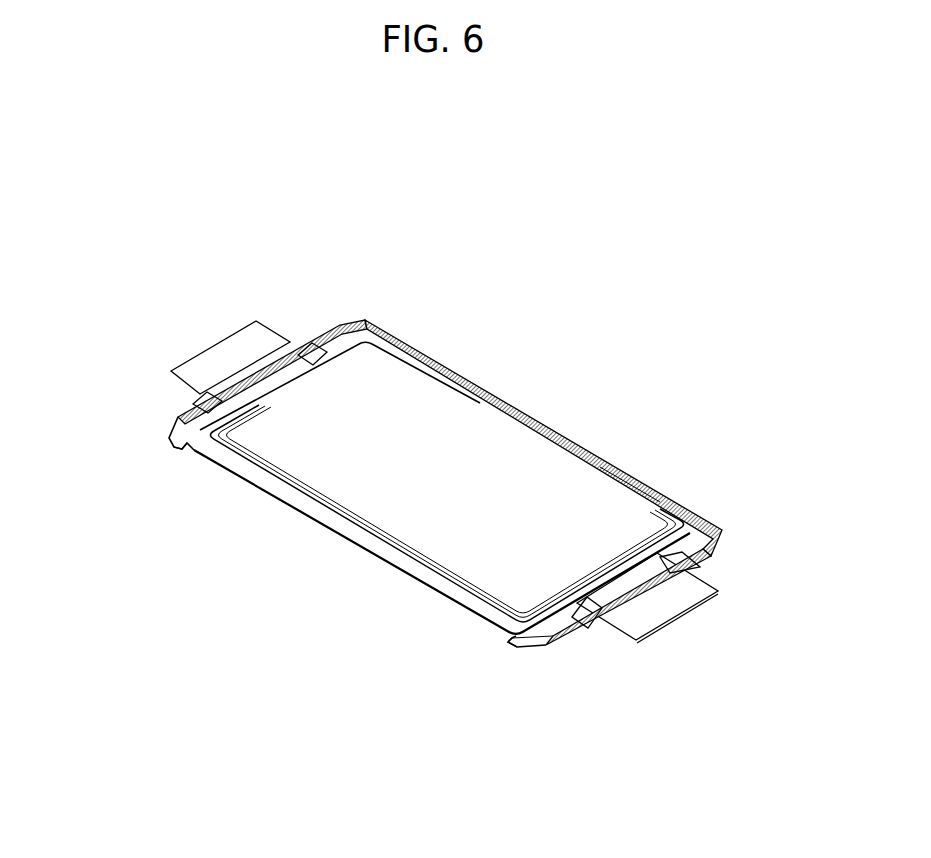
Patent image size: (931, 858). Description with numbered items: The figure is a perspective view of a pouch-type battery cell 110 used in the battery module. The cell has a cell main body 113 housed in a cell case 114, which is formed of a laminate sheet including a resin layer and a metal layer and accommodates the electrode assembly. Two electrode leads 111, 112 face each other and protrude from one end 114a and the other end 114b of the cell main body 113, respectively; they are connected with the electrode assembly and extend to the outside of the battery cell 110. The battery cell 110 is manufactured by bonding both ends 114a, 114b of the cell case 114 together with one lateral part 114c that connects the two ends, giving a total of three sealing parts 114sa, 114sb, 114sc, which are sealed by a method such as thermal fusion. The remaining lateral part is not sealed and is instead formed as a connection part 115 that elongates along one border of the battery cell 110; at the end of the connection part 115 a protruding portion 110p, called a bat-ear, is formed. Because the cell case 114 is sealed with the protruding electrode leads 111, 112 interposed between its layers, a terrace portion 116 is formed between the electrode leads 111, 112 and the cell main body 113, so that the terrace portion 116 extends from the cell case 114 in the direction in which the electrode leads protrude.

The battery cell 110 is at (432, 197).
The protruding portion 110p is at (173, 444).
The electrode lead 111 is at (230, 357).
The electrode lead 112 is at (684, 612).
The cell main body 113 is at (455, 415).
The cell case 114 is at (480, 489).
The one end 114a is at (320, 328).
The other end 114b is at (577, 636).
The lateral part 114c is at (550, 428).
The sealing part 114sa is at (304, 346).
The sealing part 114sb is at (708, 553).
The sealing part 114sc is at (640, 485).
The connection part 115 is at (372, 545).
The terrace portion 116 is at (553, 620).